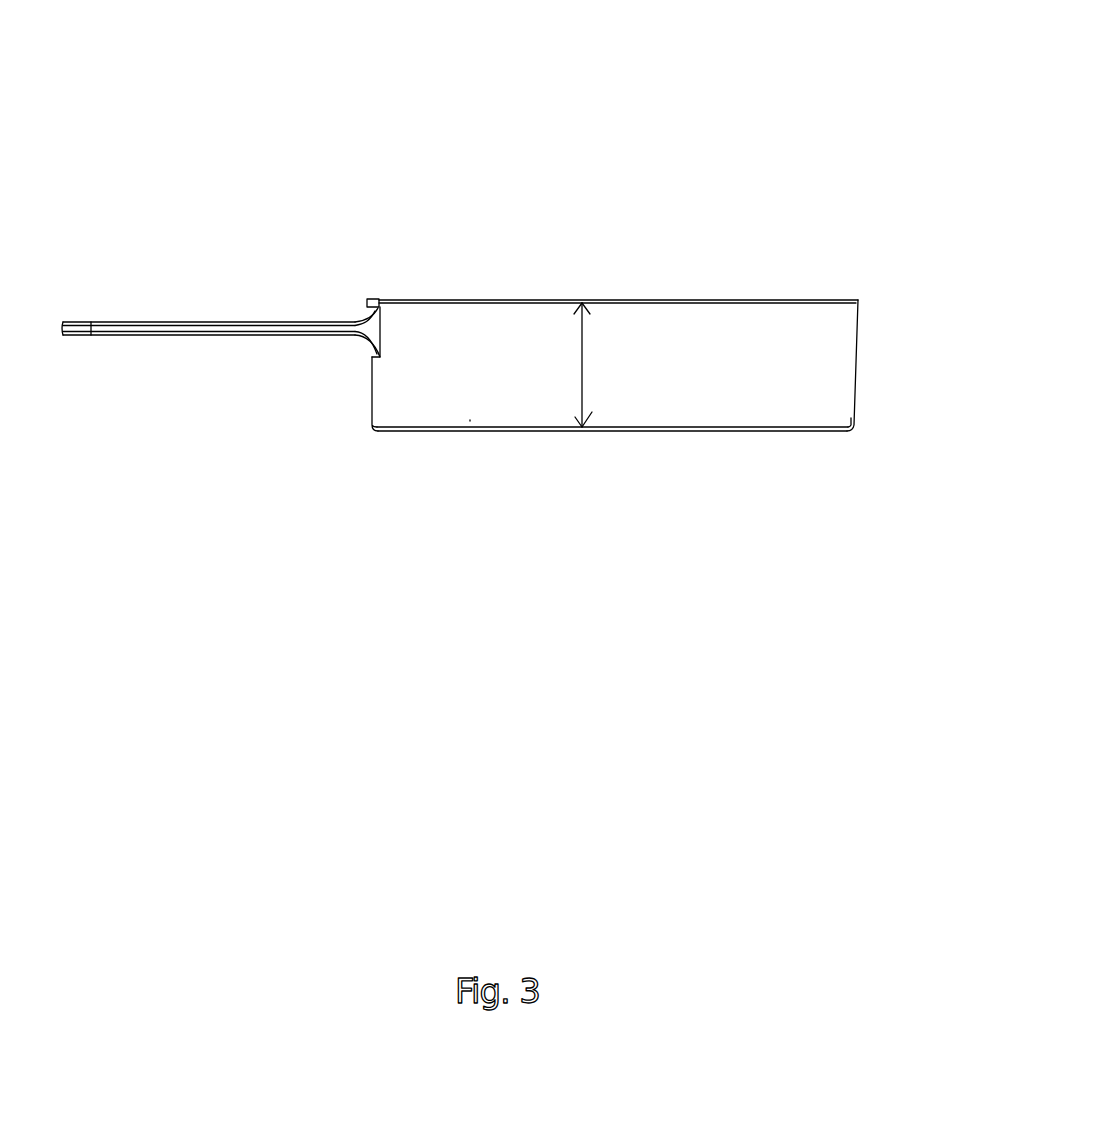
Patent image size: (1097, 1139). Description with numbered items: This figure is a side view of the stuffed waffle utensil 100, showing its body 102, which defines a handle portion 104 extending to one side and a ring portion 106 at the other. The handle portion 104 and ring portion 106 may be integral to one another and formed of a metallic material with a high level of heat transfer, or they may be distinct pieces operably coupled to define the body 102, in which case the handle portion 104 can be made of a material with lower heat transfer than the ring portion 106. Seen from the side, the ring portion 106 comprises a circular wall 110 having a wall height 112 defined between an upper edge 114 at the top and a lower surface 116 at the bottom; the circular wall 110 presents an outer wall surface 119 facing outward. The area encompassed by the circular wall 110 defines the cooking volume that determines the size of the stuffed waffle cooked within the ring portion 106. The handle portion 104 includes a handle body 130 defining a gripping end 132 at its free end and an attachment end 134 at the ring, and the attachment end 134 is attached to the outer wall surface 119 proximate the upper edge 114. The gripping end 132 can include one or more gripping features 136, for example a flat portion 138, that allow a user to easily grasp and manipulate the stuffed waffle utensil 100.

The stuffed waffle utensil 100 is at (711, 128).
The body 102 is at (370, 388).
The handle portion 104 is at (120, 321).
The ring portion 106 is at (858, 391).
The circular wall 110 is at (472, 405).
The wall height 112 is at (578, 378).
The upper edge 114 is at (645, 300).
The lower surface 116 is at (745, 433).
The outer wall surface 119 is at (815, 390).
The handle body 130 is at (185, 336).
The gripping end 132 is at (107, 336).
The attachment end 134 is at (363, 318).
The gripping features 136 is at (233, 321).
The flat portion 138 is at (160, 321).